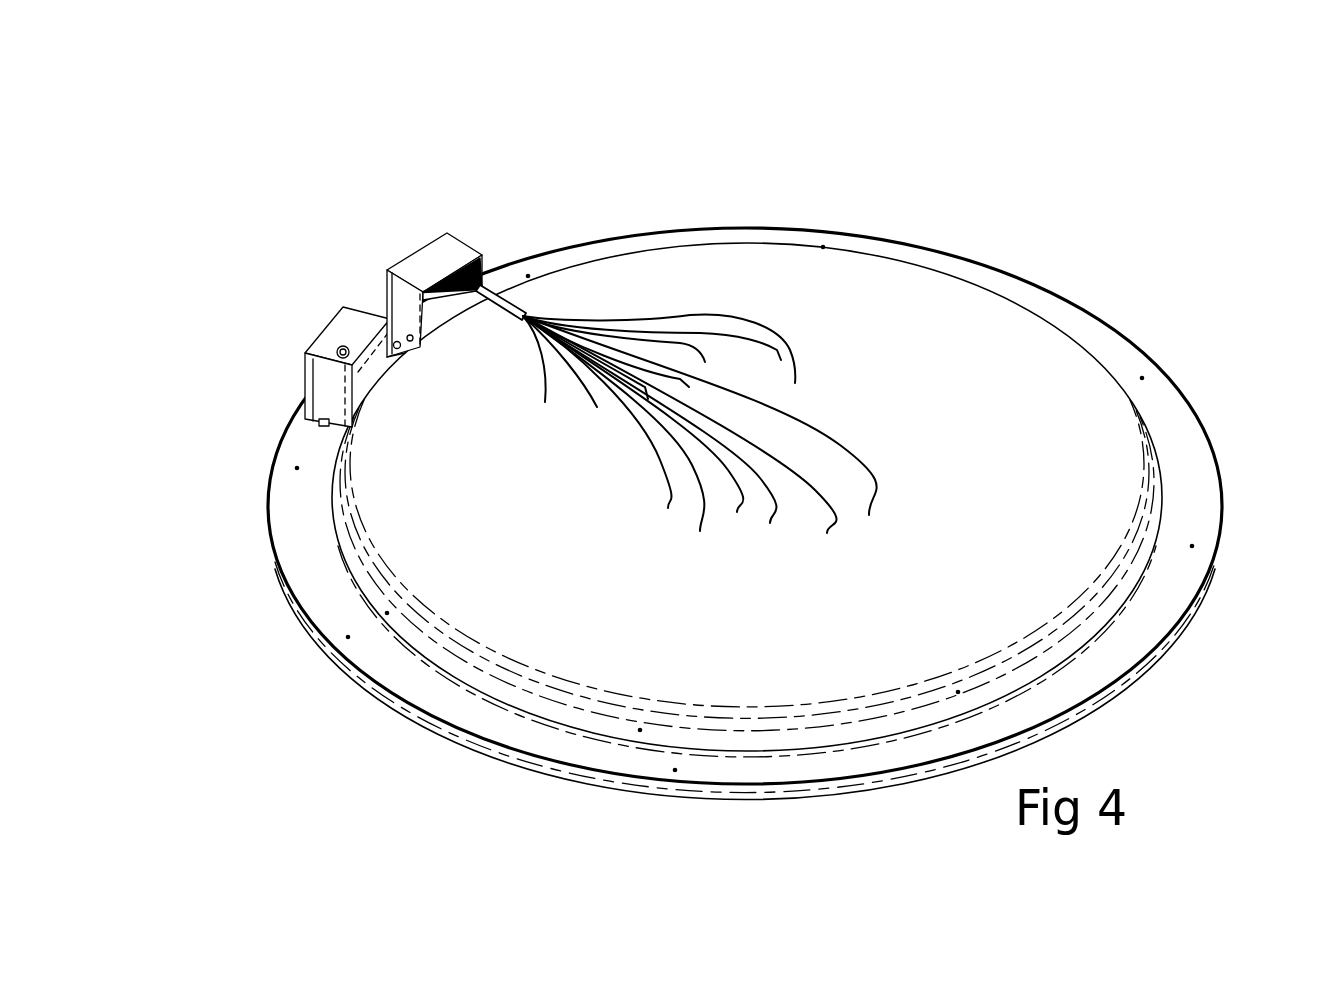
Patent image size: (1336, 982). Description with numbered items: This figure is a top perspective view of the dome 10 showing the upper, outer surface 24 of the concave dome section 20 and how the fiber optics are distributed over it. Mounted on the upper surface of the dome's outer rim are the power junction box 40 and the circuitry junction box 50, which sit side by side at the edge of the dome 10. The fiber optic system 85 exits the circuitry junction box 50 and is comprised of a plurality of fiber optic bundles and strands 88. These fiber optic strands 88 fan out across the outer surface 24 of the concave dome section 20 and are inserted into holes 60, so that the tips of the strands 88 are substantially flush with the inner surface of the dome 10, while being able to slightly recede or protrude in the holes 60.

The dome 10 is at (1187, 402).
The concave dome section 20 is at (960, 342).
The outer surface 24 is at (410, 537).
The power junction box 40 is at (347, 320).
The circuitry junction box 50 is at (428, 255).
The fiber optic system 85 is at (542, 260).
The fiber optic strands 88 is at (817, 423).
The holes 60 is at (700, 531).